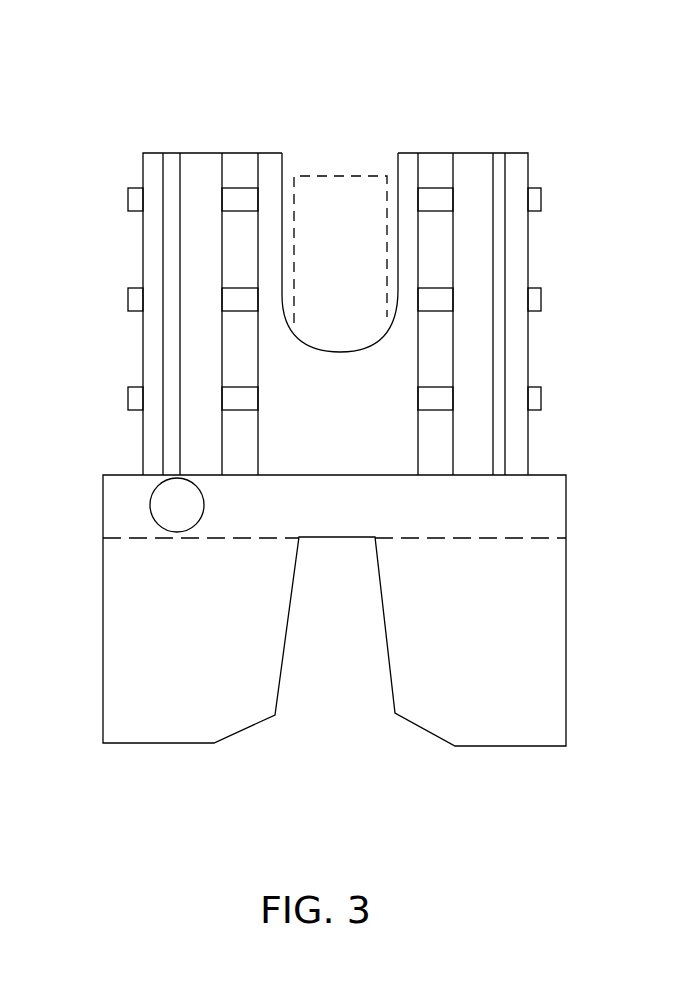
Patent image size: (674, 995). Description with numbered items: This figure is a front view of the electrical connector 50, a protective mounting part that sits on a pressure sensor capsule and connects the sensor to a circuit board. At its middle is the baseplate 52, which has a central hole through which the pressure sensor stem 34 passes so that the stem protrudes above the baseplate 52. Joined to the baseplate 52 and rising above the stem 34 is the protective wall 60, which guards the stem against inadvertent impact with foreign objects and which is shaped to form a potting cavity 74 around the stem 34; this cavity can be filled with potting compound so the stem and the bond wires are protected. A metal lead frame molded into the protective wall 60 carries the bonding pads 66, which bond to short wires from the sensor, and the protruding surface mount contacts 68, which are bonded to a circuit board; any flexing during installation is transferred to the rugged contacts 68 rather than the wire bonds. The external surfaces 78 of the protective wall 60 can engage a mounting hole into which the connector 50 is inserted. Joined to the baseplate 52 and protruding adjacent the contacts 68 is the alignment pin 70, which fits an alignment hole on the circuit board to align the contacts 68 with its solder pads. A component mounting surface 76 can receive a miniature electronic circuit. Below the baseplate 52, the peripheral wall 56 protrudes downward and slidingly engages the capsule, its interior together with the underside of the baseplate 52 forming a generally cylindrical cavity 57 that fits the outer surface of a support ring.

The electrical connector 50 is at (170, 119).
The pressure sensor stem 34 is at (300, 176).
The protective wall 60 is at (408, 153).
The bonding pads 66 is at (247, 203).
The surface mount contacts 68 is at (138, 199).
The external surfaces 78 is at (528, 245).
The potting cavity 74 is at (343, 419).
The baseplate 52 is at (123, 512).
The alignment pin 70 is at (170, 537).
The component mounting surface 76 is at (566, 618).
The peripheral wall 56 is at (483, 654).
The cylindrical cavity 57 is at (342, 654).